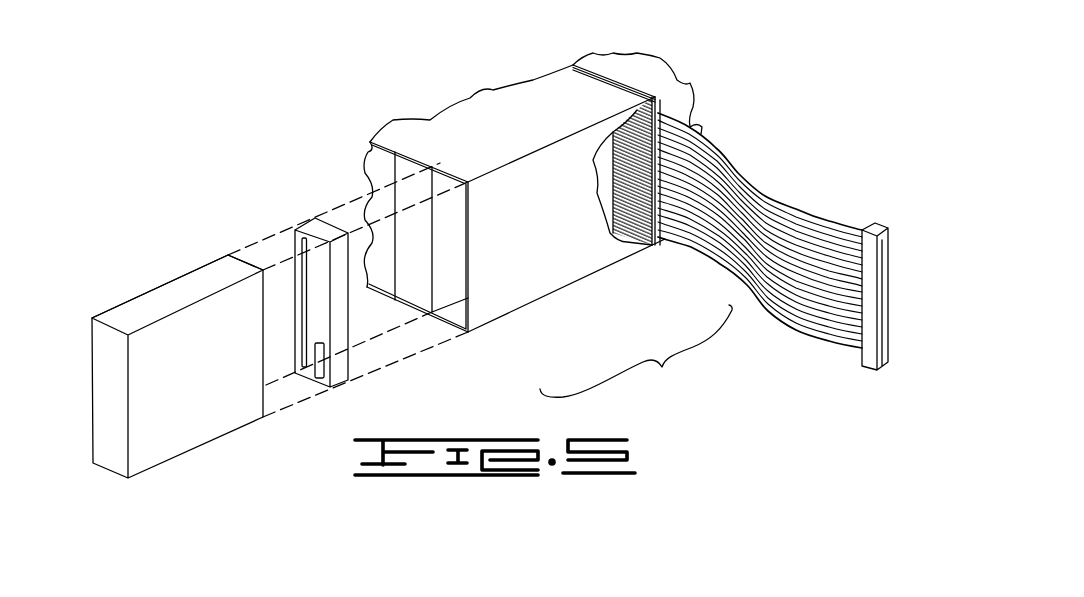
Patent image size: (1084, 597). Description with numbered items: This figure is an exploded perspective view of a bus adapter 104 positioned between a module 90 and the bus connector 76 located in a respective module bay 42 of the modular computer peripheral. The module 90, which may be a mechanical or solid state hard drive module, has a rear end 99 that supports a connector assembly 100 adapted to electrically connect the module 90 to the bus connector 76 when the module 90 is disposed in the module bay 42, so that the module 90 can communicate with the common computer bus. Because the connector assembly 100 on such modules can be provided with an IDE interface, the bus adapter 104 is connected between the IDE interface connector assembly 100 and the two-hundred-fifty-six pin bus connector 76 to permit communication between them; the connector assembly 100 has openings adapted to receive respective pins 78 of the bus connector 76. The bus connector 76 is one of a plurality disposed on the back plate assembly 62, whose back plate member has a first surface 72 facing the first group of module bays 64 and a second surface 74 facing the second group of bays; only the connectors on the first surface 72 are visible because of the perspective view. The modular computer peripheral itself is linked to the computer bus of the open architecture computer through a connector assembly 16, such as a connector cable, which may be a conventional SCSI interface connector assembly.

The connector assembly 16 is at (803, 210).
The module bay 42 is at (450, 272).
The back plate assembly 62 is at (582, 62).
The first group of module bays 64 is at (636, 351).
The first surface 72 is at (573, 67).
The second surface 74 is at (605, 74).
The bus connector 76 is at (632, 212).
The pins 78 is at (638, 228).
The module 90 is at (145, 292).
The rear end 99 is at (250, 262).
The connector assembly 100 is at (277, 168).
The bus adapter 104 is at (298, 225).